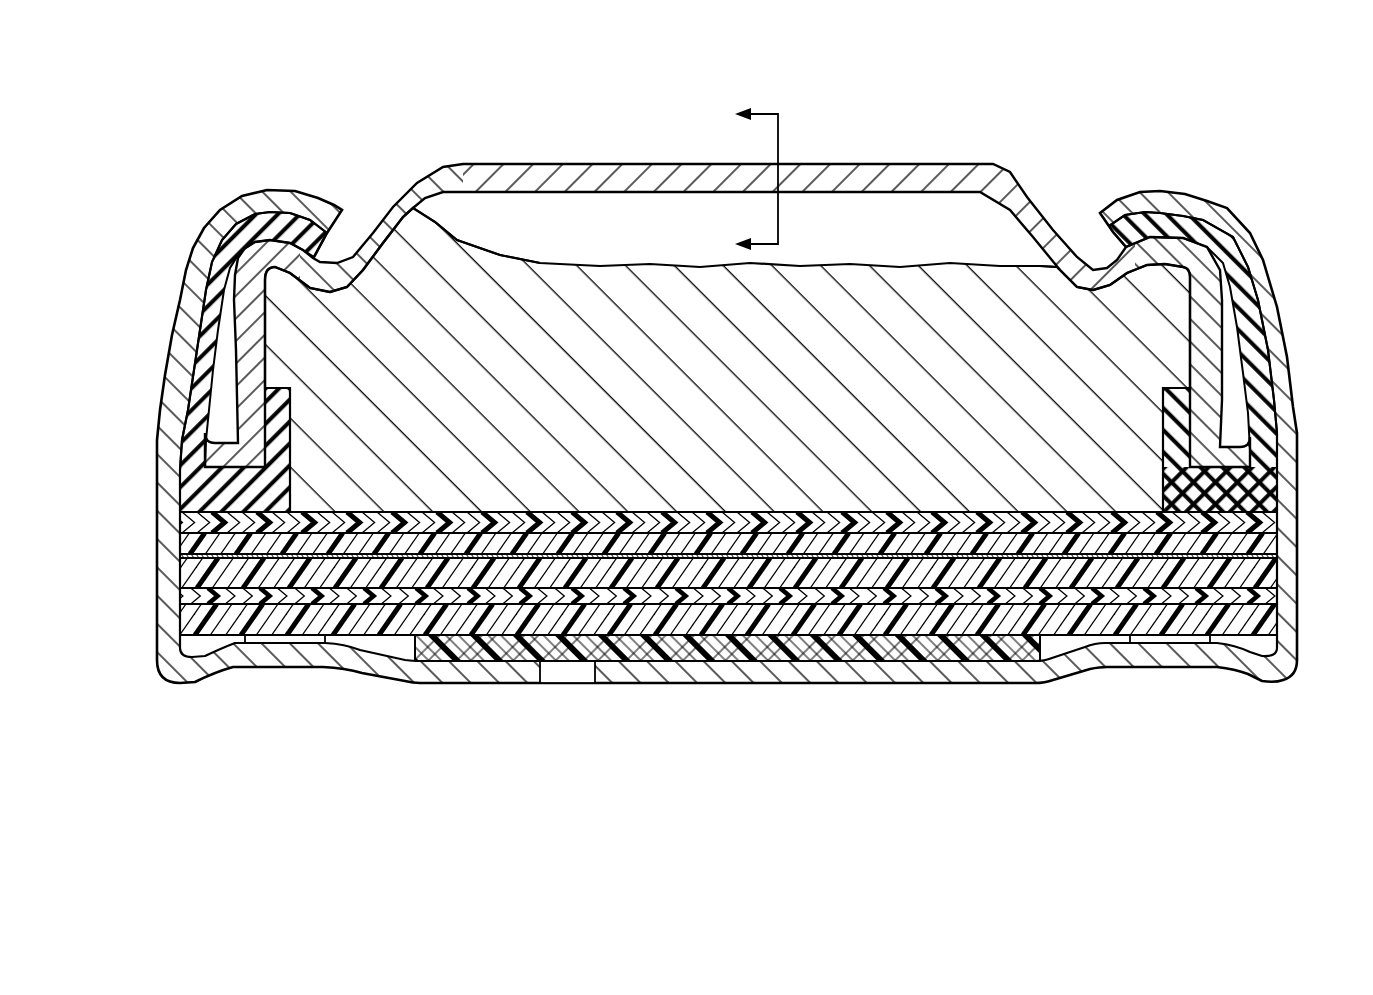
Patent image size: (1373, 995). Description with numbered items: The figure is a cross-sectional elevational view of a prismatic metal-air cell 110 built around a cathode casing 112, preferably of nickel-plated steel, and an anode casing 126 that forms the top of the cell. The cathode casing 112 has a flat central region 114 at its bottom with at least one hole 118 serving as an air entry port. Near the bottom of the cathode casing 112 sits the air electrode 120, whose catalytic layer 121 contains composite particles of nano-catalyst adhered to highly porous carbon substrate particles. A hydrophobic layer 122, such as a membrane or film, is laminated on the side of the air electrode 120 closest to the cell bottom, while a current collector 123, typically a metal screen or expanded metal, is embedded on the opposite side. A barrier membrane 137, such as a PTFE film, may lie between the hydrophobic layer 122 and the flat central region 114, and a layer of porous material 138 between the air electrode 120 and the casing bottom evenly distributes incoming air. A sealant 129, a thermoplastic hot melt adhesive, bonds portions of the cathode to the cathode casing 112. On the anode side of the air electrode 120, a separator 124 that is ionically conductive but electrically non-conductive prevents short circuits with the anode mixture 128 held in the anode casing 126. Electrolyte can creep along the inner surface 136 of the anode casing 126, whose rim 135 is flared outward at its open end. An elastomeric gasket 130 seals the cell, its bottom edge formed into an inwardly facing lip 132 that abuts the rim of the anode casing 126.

The prismatic cell 110 is at (315, 130).
The cathode casing 112 is at (183, 297).
The flat central region 114 is at (470, 687).
The hole 118 is at (568, 673).
The air electrode 120 is at (1267, 575).
The catalytic layer 121 is at (185, 547).
The hydrophobic layer 122 is at (1273, 595).
The current collector 123 is at (185, 557).
The separator 124 is at (183, 527).
The anode casing 126 is at (571, 170).
The anode mixture 128 is at (652, 270).
The sealant 129 is at (278, 640).
The gasket 130 is at (1258, 370).
The inwardly facing lip 132 is at (296, 406).
The rim 135 is at (213, 462).
The inner surface 136 is at (1100, 292).
The barrier membrane 137 is at (1268, 615).
The layer of porous material 138 is at (800, 661).